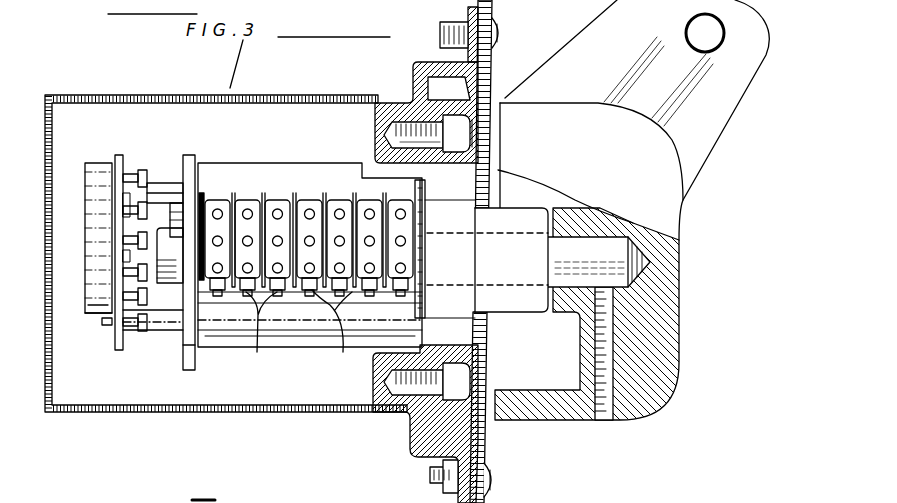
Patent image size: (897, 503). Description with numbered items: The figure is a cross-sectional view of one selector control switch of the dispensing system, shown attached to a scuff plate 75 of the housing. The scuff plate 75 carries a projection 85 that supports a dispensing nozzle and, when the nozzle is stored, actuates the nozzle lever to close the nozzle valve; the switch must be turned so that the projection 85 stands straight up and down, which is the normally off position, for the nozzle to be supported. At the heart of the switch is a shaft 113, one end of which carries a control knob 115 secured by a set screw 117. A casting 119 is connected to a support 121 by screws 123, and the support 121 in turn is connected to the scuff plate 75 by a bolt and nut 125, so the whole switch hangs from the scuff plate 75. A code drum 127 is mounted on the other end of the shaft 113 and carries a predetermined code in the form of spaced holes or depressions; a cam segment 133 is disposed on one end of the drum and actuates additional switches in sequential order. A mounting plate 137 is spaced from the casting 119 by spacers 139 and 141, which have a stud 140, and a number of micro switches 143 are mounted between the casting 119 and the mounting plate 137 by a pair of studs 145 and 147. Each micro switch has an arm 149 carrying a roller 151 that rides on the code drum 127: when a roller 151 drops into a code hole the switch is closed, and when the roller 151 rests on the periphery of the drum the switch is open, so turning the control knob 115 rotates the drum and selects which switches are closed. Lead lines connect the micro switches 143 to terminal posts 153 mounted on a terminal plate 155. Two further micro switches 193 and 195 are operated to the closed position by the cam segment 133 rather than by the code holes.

The scuff plate 75 is at (492, 88).
The projection 85 is at (762, 80).
The shaft 113 is at (611, 240).
The control knob 115 is at (681, 276).
The set screw 117 is at (593, 405).
The casting 119 is at (470, 332).
The support 121 is at (413, 83).
The screws 123 is at (456, 118).
The bolt and nut 125 is at (450, 18).
The code drum 127 is at (296, 163).
The cam segment 133 is at (370, 352).
The mounting plate 137 is at (182, 362).
The spacer 139 is at (157, 327).
The stud 140 is at (103, 323).
The spacer 141 is at (160, 183).
The micro switches 143 is at (278, 205).
The stud 145 is at (178, 246).
The stud 147 is at (183, 194).
The arms 149 is at (417, 296).
The rollers 151 is at (305, 331).
The terminal posts 153 is at (123, 236).
The terminal plate 155 is at (118, 297).
The micro switch 193 is at (420, 197).
The micro switch 195 is at (407, 222).